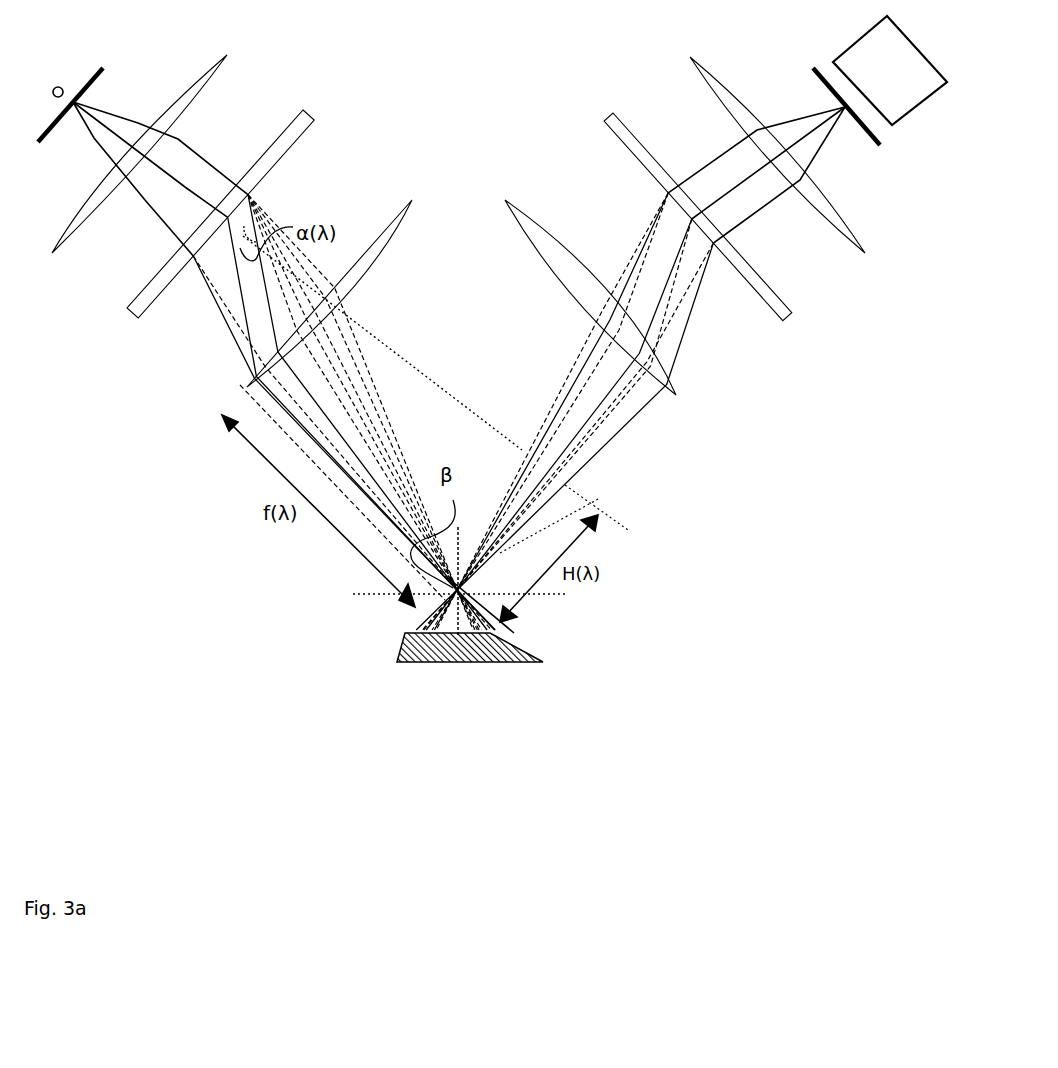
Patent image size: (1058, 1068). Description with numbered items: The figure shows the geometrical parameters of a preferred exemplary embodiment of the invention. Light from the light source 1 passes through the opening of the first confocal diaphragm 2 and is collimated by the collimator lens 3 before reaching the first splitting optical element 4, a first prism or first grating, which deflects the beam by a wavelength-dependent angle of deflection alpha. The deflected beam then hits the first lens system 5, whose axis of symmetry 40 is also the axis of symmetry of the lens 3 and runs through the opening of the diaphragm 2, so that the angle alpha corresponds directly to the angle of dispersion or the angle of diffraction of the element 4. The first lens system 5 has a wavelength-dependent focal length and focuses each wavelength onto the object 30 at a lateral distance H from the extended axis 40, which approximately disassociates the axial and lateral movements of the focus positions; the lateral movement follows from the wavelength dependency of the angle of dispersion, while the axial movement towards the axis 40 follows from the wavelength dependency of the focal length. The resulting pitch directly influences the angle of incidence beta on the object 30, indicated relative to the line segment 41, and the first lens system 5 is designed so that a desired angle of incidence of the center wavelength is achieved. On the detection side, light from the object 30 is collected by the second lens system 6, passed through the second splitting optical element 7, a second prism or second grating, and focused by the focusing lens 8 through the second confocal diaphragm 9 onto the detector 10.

The light source 1 is at (50, 62).
The first confocal diaphragm 2 is at (101, 70).
The collimator lens 3 is at (207, 88).
The first splitting optical element 4 is at (130, 312).
The first lens system 5 is at (402, 212).
The second lens system 6 is at (678, 390).
The second splitting optical element 7 is at (783, 322).
The focusing lens 8 is at (848, 243).
The second confocal diaphragm 9 is at (818, 62).
The detector 10 is at (890, 70).
The object 30 is at (405, 631).
The axis of symmetry of first lens system 40 is at (418, 370).
The line segment 41 is at (459, 528).